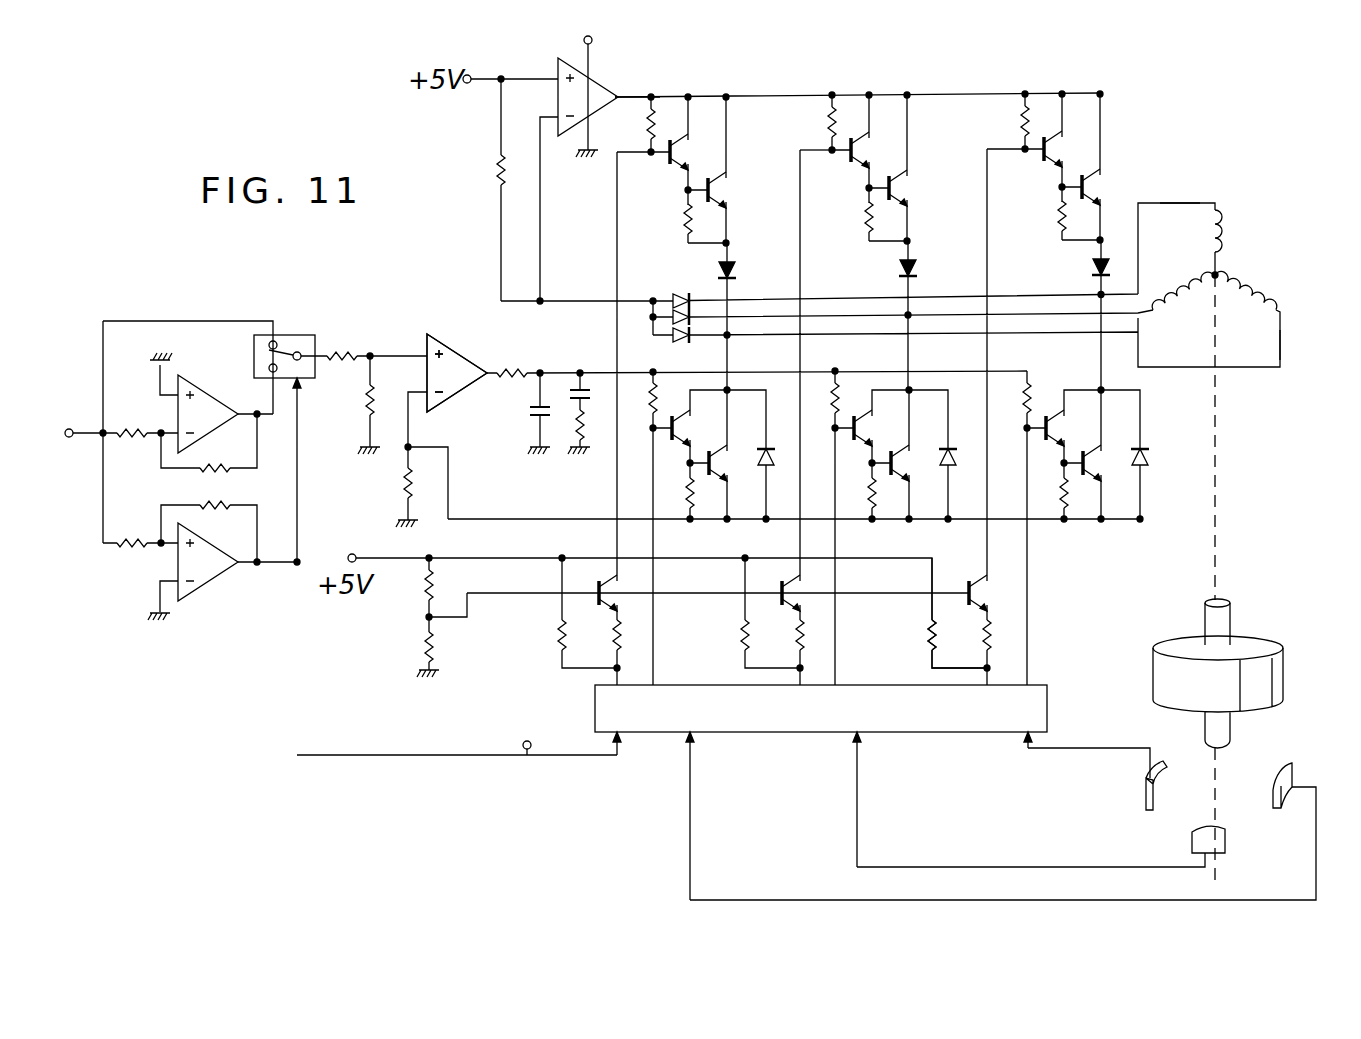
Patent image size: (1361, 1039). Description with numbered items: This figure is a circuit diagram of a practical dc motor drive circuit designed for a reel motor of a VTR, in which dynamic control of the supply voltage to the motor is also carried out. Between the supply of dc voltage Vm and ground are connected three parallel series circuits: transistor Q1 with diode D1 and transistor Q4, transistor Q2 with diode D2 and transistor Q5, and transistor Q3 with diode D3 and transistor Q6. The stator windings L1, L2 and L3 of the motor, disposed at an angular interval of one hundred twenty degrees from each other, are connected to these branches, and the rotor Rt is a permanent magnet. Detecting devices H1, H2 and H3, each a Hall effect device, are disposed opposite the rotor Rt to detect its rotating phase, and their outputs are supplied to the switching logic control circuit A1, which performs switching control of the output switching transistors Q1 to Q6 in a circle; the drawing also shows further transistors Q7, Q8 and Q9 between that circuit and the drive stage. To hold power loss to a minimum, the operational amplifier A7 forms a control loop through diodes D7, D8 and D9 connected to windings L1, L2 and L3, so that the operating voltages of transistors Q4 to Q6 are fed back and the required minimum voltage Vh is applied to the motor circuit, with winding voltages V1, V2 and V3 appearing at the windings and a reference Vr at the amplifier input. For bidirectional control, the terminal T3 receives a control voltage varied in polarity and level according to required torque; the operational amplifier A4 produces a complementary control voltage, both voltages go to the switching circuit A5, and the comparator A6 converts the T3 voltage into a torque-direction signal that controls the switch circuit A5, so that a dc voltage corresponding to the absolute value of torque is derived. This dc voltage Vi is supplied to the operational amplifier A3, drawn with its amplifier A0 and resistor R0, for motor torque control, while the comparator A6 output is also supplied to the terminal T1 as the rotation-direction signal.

The output switching transistor Q1 is at (1039, 214).
The output switching transistor Q2 is at (849, 214).
The output switching transistor Q3 is at (667, 217).
The output switching transistor Q4 is at (1063, 498).
The output switching transistor Q5 is at (872, 498).
The output switching transistor Q6 is at (688, 498).
The switching transistor Q7 is at (600, 612).
The switching transistor Q8 is at (783, 612).
The switching transistor Q9 is at (970, 612).
The diode D1 is at (1084, 271).
The diode D2 is at (892, 271).
The diode D3 is at (737, 275).
The diode D7 is at (682, 304).
The diode D8 is at (670, 300).
The diode D9 is at (683, 343).
The operational amplifier A0 is at (473, 383).
The switching logic control circuit A1 is at (655, 734).
The operational amplifier A3 is at (503, 357).
The operational amplifier A4 is at (213, 388).
The switching circuit A5 is at (310, 380).
The comparator A6 is at (225, 597).
The operational amplifier A7 is at (600, 112).
The resistor R0 is at (404, 486).
The terminal T1 is at (527, 758).
The terminal T3 is at (69, 440).
The detecting device H1 is at (1143, 812).
The detecting device H2 is at (1226, 840).
The detecting device H3 is at (1290, 770).
The stator winding L1 is at (1204, 244).
The stator winding L2 is at (1182, 306).
The stator winding L3 is at (1247, 306).
The rotor Rt is at (1283, 682).
The coil voltage V1 is at (1172, 205).
The coil voltage V2 is at (1140, 314).
The coil voltage V3 is at (1283, 325).
The output voltage Vh is at (640, 96).
The input voltage Vi is at (379, 350).
The dc voltage Vm is at (628, 82).
The reference voltage Vr is at (513, 170).